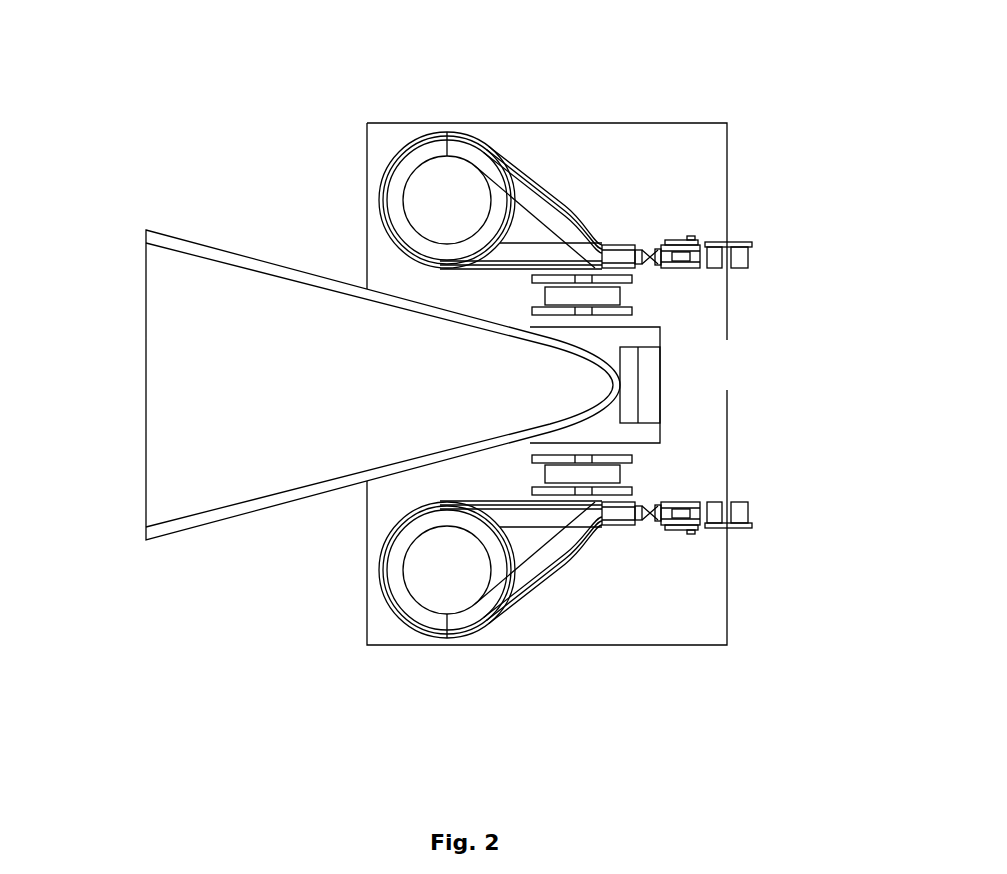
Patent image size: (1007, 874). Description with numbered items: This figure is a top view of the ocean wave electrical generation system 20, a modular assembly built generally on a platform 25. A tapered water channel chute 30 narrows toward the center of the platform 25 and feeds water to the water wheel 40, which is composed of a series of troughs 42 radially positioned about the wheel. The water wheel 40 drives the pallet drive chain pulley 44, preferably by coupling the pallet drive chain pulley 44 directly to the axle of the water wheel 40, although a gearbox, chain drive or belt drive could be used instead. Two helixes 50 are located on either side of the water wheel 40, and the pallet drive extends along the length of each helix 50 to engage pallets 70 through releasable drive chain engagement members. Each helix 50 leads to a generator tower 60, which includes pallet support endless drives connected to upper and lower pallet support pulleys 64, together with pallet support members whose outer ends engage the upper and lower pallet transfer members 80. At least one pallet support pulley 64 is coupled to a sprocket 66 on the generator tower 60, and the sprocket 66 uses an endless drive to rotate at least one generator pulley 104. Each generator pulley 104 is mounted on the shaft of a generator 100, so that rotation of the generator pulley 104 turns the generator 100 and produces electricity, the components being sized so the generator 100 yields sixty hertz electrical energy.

The ocean wave electrical generation system 20 is at (205, 120).
The platform 25 is at (633, 645).
The tapered water channel chute 30 is at (146, 327).
The water wheel 40 is at (642, 336).
The troughs 42 is at (660, 395).
The pallet drive chain pulley 44 is at (621, 294).
The helix 50 is at (379, 199).
The generator tower 60 is at (751, 245).
The pallet support pulley 64 is at (668, 241).
The sprocket 66 is at (700, 237).
The pallet 70 is at (650, 247).
The pallet transfer member 80 is at (607, 244).
The generator 100 is at (750, 500).
The generator pulley 104 is at (737, 239).